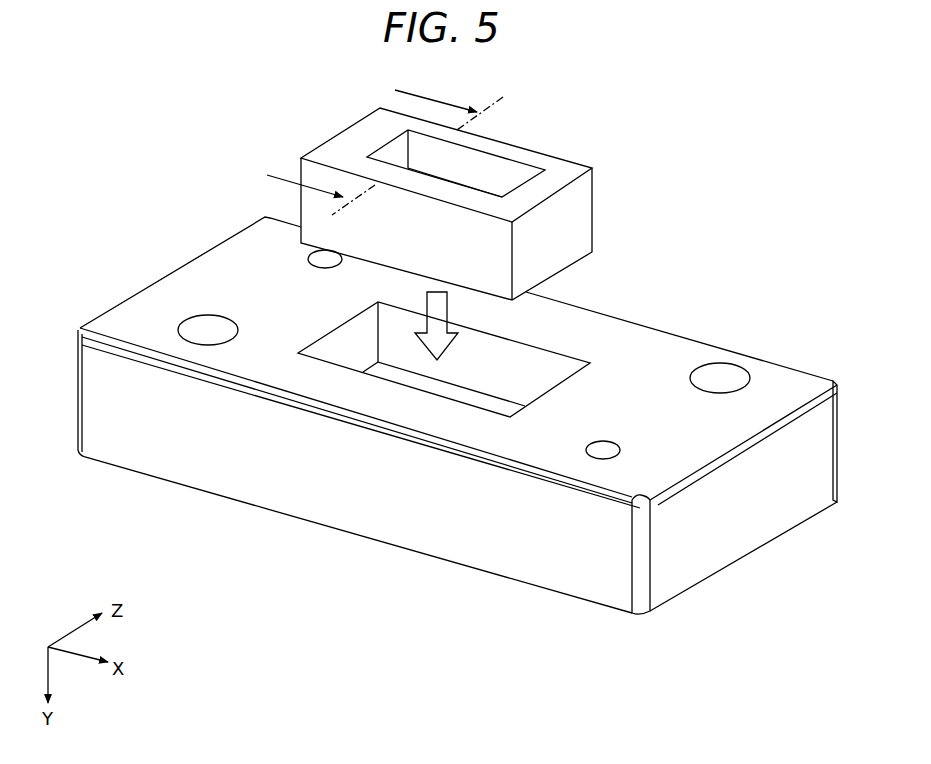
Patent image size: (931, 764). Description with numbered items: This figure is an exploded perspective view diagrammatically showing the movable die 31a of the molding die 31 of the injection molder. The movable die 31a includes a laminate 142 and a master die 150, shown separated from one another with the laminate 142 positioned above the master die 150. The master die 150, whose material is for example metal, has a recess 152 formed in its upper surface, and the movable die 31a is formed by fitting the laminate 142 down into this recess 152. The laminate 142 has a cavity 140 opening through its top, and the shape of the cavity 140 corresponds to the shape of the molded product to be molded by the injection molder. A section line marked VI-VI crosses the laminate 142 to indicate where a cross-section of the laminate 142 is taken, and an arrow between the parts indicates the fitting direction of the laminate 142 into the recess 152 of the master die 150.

The molding die 31 is at (712, 190).
The movable die 31a is at (695, 257).
The cavity 140 is at (506, 157).
The laminate 142 is at (553, 167).
The master die 150 is at (185, 293).
The recess 152 is at (552, 357).